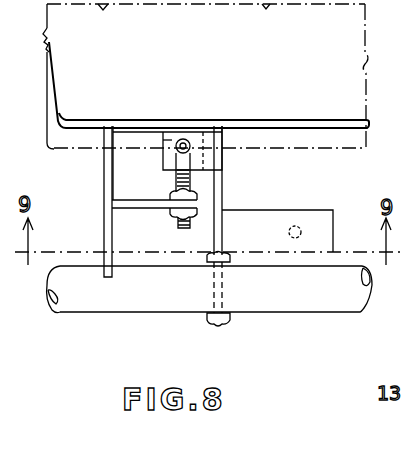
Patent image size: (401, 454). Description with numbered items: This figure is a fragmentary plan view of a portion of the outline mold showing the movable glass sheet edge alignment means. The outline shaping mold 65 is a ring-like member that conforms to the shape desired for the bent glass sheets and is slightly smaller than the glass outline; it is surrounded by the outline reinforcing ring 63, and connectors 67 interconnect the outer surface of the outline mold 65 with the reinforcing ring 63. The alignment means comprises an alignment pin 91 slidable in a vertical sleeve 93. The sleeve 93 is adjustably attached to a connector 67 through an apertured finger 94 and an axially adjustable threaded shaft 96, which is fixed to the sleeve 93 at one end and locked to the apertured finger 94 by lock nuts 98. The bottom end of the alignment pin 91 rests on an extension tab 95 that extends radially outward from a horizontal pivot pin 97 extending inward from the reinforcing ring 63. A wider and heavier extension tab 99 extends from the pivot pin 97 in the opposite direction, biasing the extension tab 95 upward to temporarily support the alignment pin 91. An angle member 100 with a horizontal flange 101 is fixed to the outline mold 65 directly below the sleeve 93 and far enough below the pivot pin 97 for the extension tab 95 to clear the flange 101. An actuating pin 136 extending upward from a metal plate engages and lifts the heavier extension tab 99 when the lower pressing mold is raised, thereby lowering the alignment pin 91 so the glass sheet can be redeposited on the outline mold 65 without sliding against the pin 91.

The outline reinforcing ring 63 is at (300, 306).
The outline shaping mold 65 is at (285, 122).
The connector 67 is at (104, 220).
The alignment pin 91 is at (184, 139).
The vertical sleeve 93 is at (176, 155).
The apertured finger 94 is at (140, 200).
The extension tab 95 is at (167, 136).
The threaded shaft 96 is at (178, 227).
The horizontal pivot pin 97 is at (222, 183).
The lock nuts 98 is at (199, 213).
The heavier extension tab 99 is at (318, 212).
The angle member 100 is at (205, 125).
The horizontal flange 101 is at (176, 175).
The actuating pin 136 is at (290, 224).